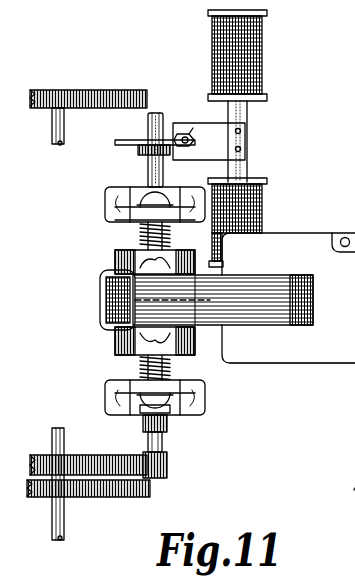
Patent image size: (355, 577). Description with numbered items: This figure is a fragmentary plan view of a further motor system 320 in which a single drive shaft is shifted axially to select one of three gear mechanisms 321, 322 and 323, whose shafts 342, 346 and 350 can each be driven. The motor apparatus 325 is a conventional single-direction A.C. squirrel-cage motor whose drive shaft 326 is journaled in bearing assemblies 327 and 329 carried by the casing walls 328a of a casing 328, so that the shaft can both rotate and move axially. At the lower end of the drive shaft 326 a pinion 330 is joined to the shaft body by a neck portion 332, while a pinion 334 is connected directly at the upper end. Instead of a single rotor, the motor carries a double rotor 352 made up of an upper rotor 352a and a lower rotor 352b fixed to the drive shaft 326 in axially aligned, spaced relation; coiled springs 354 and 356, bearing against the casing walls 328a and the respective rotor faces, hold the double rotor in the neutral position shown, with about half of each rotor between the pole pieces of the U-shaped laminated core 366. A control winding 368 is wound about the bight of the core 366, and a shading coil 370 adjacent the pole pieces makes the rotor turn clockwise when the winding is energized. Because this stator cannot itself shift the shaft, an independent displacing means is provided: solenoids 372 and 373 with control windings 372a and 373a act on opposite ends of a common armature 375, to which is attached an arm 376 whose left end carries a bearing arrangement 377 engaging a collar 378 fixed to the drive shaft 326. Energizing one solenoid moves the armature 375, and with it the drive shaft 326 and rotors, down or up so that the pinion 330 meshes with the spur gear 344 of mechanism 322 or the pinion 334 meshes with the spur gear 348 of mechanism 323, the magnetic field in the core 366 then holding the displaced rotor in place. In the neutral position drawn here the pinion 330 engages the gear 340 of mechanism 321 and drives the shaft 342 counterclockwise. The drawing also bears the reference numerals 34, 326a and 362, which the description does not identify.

The frame 34 is at (354, 493).
The motor system 320 is at (170, 302).
The gear mechanism 321 is at (97, 478).
The gear mechanism 322 is at (97, 504).
The gear mechanism 323 is at (90, 113).
The motor apparatus 325 is at (170, 302).
The drive shaft 326 is at (142, 156).
The lower collar 326a is at (168, 425).
The bearing assembly 327 is at (128, 220).
The casing 328 is at (118, 188).
The casing walls 328a is at (108, 203).
The bearing assembly 329 is at (130, 397).
The pinion 330 is at (170, 470).
The neck portion 332 is at (165, 442).
The pinion 334 is at (152, 113).
The gear 340 is at (75, 455).
The shaft 342 is at (79, 478).
The spur gear 344 is at (127, 498).
The output shaft 346 is at (63, 539).
The spur gear 348 is at (117, 90).
The output shaft 350 is at (57, 143).
The double rotor 352 is at (165, 300).
The upper rotor 352a is at (195, 258).
The lower rotor 352b is at (115, 347).
The coiled spring 354 is at (172, 235).
The coiled spring 356 is at (172, 368).
The mounting plate 362 is at (299, 336).
The U-shaped laminated core 366 is at (257, 308).
The control winding 368 is at (313, 243).
The shading coil 370 is at (100, 305).
The solenoid 372 is at (261, 222).
The control winding 372a is at (262, 219).
The solenoid 373 is at (262, 55).
The control winding 373a is at (262, 50).
The common armature 375 is at (248, 158).
The arm 376 is at (247, 138).
The bearing arrangement 377 is at (186, 130).
The collar 378 is at (128, 140).